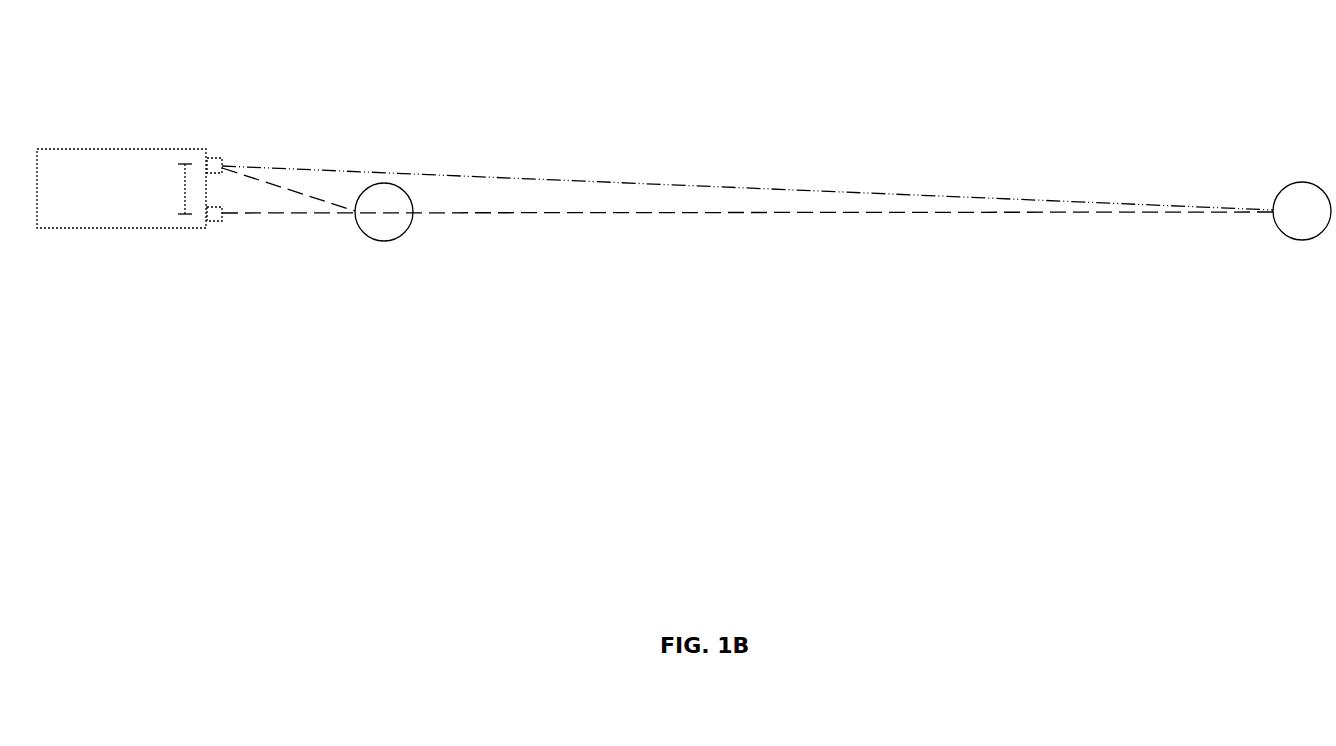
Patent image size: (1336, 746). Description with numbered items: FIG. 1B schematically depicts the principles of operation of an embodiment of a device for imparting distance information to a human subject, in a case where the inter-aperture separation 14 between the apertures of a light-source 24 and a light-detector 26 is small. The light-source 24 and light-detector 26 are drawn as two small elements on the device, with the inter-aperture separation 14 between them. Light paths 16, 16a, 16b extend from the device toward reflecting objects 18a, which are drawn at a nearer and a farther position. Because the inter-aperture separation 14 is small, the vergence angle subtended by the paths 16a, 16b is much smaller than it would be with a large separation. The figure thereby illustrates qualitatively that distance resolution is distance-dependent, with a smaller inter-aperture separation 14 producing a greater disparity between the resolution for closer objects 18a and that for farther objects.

The inter-aperture separation 14 is at (184, 193).
The light-detector 26 is at (212, 157).
The light-source 24 is at (213, 222).
The reference line 16 is at (700, 215).
The first sensing line 16a is at (282, 188).
The second sensing line 16b is at (637, 185).
The target object 18a is at (385, 242).